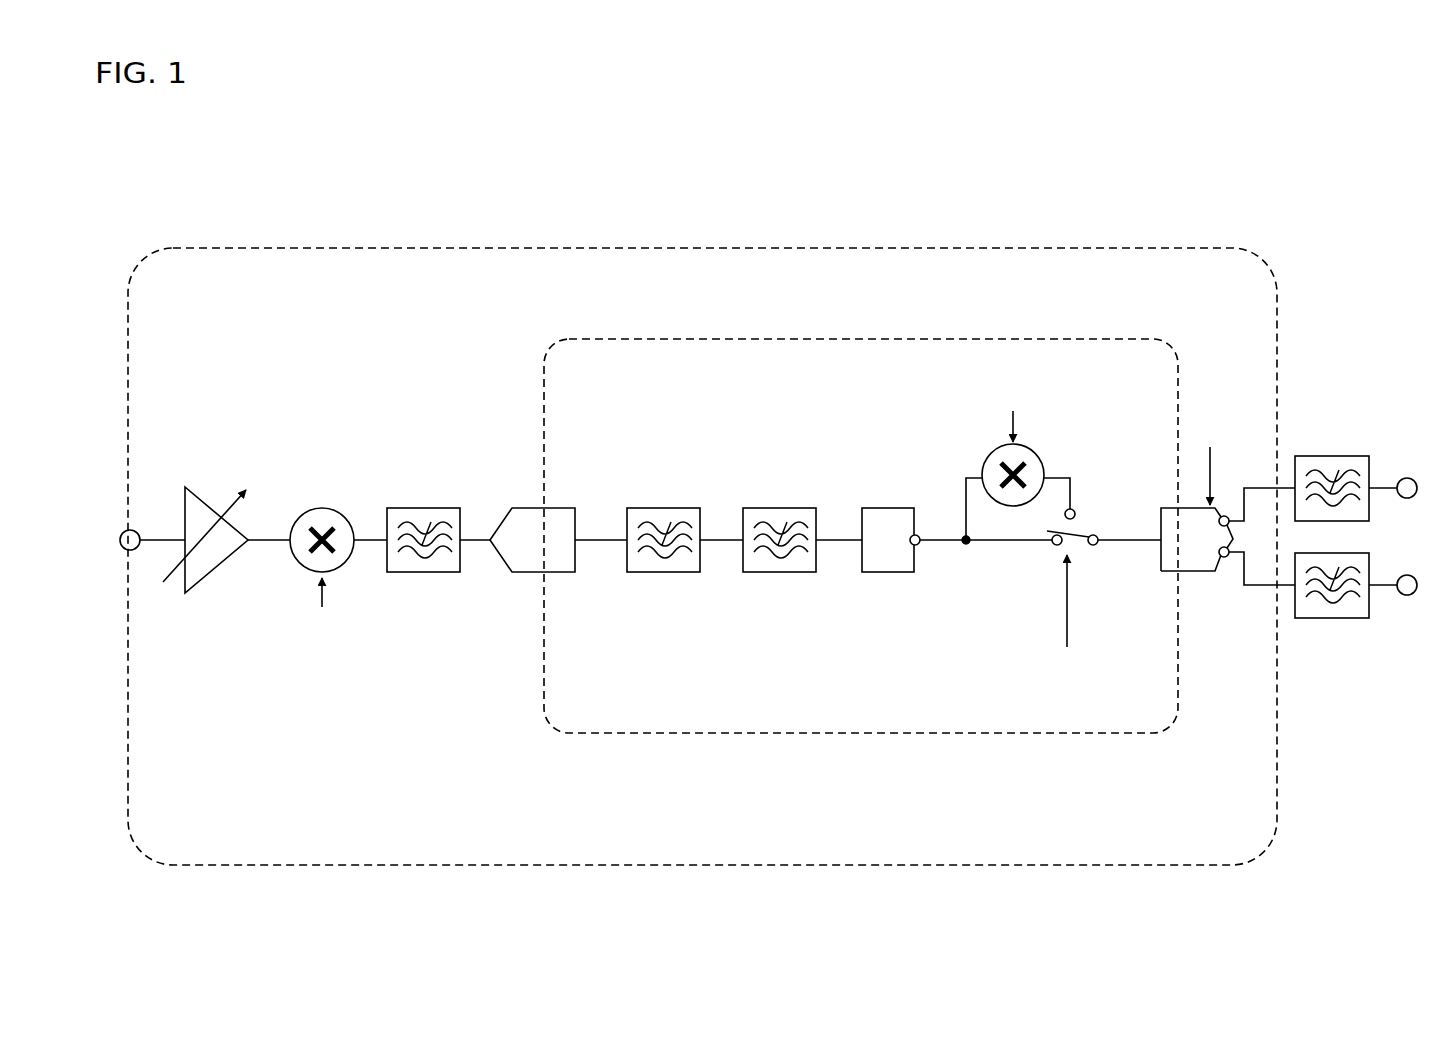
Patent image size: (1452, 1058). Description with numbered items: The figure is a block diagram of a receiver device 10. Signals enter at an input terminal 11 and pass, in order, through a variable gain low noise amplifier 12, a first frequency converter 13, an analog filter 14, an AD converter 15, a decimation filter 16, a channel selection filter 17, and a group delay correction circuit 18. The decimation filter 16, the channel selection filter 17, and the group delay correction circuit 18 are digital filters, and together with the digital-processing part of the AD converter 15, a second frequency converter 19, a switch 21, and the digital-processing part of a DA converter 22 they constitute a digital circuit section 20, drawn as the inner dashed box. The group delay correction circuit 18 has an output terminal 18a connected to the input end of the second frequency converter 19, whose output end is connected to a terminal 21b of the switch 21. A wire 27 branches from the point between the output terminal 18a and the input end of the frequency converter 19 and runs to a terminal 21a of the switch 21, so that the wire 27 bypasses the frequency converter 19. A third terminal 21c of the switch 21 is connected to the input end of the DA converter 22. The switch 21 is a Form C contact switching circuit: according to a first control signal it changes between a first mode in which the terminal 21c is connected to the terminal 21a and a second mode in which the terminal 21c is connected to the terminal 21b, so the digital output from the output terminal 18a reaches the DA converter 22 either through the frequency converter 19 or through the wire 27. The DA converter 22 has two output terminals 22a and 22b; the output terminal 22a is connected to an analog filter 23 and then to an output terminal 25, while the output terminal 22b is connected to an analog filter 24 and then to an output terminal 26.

The receiver device 10 is at (1200, 248).
The input terminal 11 is at (134, 530).
The variable gain low noise amplifier 12 is at (193, 497).
The frequency converter (first frequency converter) 13 is at (330, 509).
The analog filter 14 is at (425, 508).
The AD converter 15 is at (555, 508).
The decimation filter 16 is at (660, 508).
The channel selection filter 17 is at (778, 508).
The group delay correction circuit 18 is at (875, 508).
The output terminal 18a is at (918, 545).
The frequency converter (second frequency converter) 19 is at (1030, 443).
The digital circuit section 20 is at (1108, 339).
The switch (switching circuit) 21 is at (1075, 545).
The terminal 21a is at (1052, 545).
The terminal 21b is at (1075, 510).
The terminal 21c is at (1098, 535).
The DA converter 22 is at (1165, 571).
The output terminal 22a is at (1227, 515).
The output terminal 22b is at (1226, 558).
The analog filter 23 is at (1330, 456).
The analog filter 24 is at (1330, 618).
The output terminal 25 is at (1410, 479).
The output terminal 26 is at (1410, 576).
The wire (switching circuit) 27 is at (973, 545).